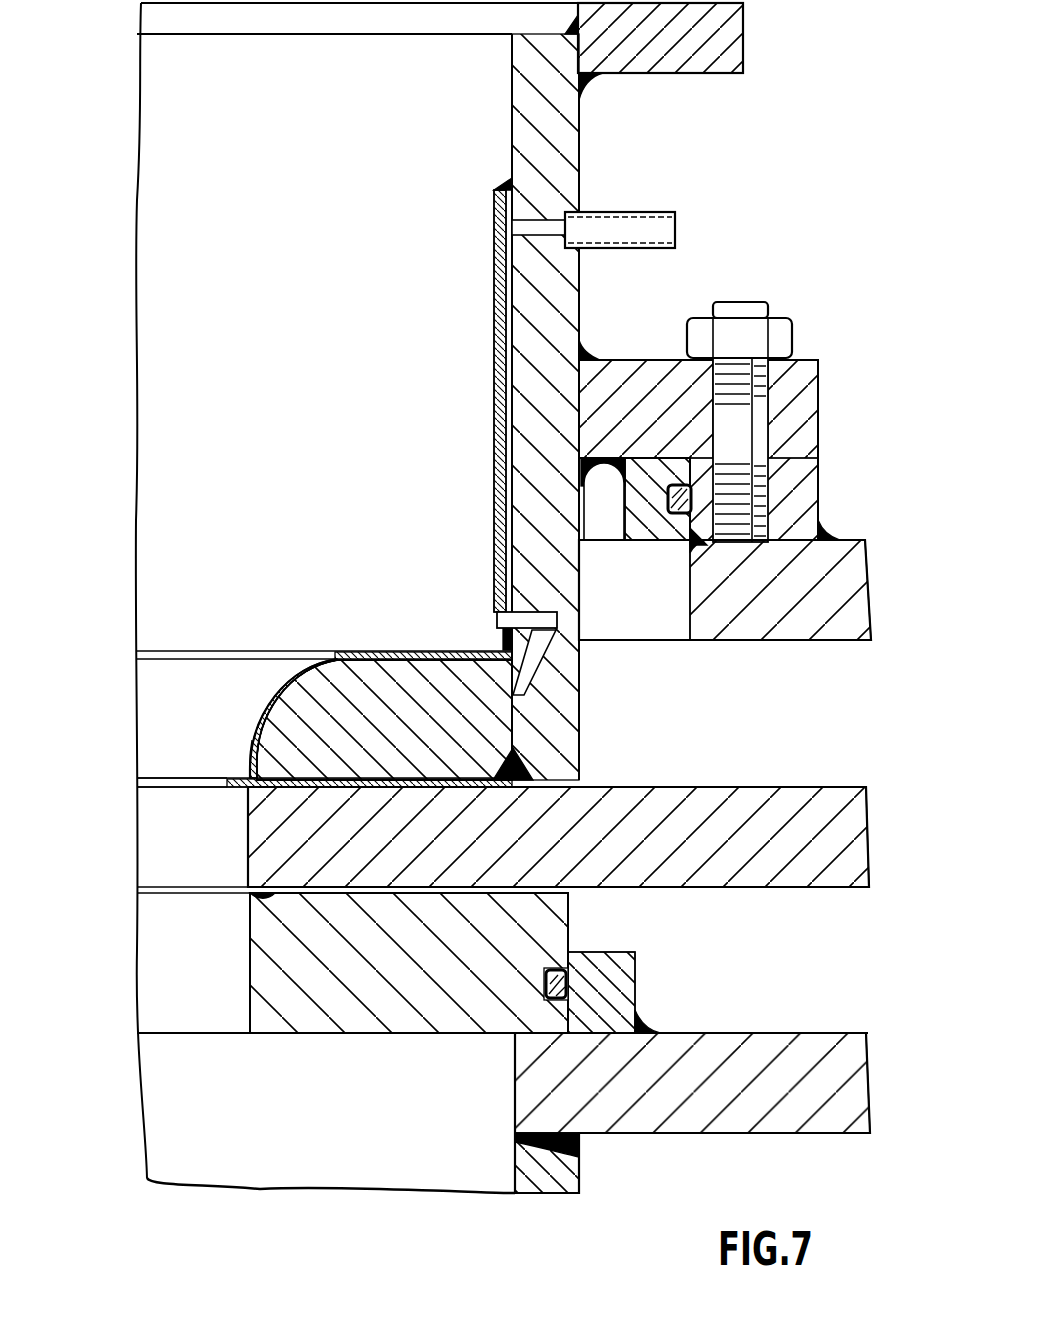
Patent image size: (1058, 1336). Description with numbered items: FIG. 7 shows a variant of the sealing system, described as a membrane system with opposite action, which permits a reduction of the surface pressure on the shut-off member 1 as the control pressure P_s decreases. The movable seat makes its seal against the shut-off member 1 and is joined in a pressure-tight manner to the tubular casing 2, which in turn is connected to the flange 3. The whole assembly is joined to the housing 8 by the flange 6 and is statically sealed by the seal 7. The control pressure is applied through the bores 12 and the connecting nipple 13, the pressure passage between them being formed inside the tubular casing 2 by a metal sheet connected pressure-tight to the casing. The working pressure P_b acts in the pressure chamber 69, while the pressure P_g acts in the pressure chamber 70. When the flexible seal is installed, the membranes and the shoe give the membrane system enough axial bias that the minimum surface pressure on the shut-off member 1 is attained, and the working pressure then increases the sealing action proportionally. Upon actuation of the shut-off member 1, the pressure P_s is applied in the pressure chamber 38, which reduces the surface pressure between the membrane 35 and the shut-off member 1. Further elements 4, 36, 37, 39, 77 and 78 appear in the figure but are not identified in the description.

The shut-off member 1 is at (845, 853).
The tubular casing 2 is at (560, 140).
The flange 3 is at (730, 50).
The lower body 4 is at (368, 1020).
The flange 6 is at (805, 395).
The seal 7 is at (680, 510).
The housing 8 is at (850, 605).
The bores 12 is at (530, 622).
The connecting nipple 13 is at (660, 228).
The membrane 35 is at (293, 785).
The curved sheet 36 is at (287, 690).
The insert body 37 is at (443, 730).
The pressure chamber 38 is at (268, 712).
The upper sheet 39 is at (400, 655).
The pressure chamber 69 is at (183, 385).
The pressure chamber 70 is at (790, 719).
The outer layer 77 is at (255, 745).
The sheet end 78 is at (240, 770).